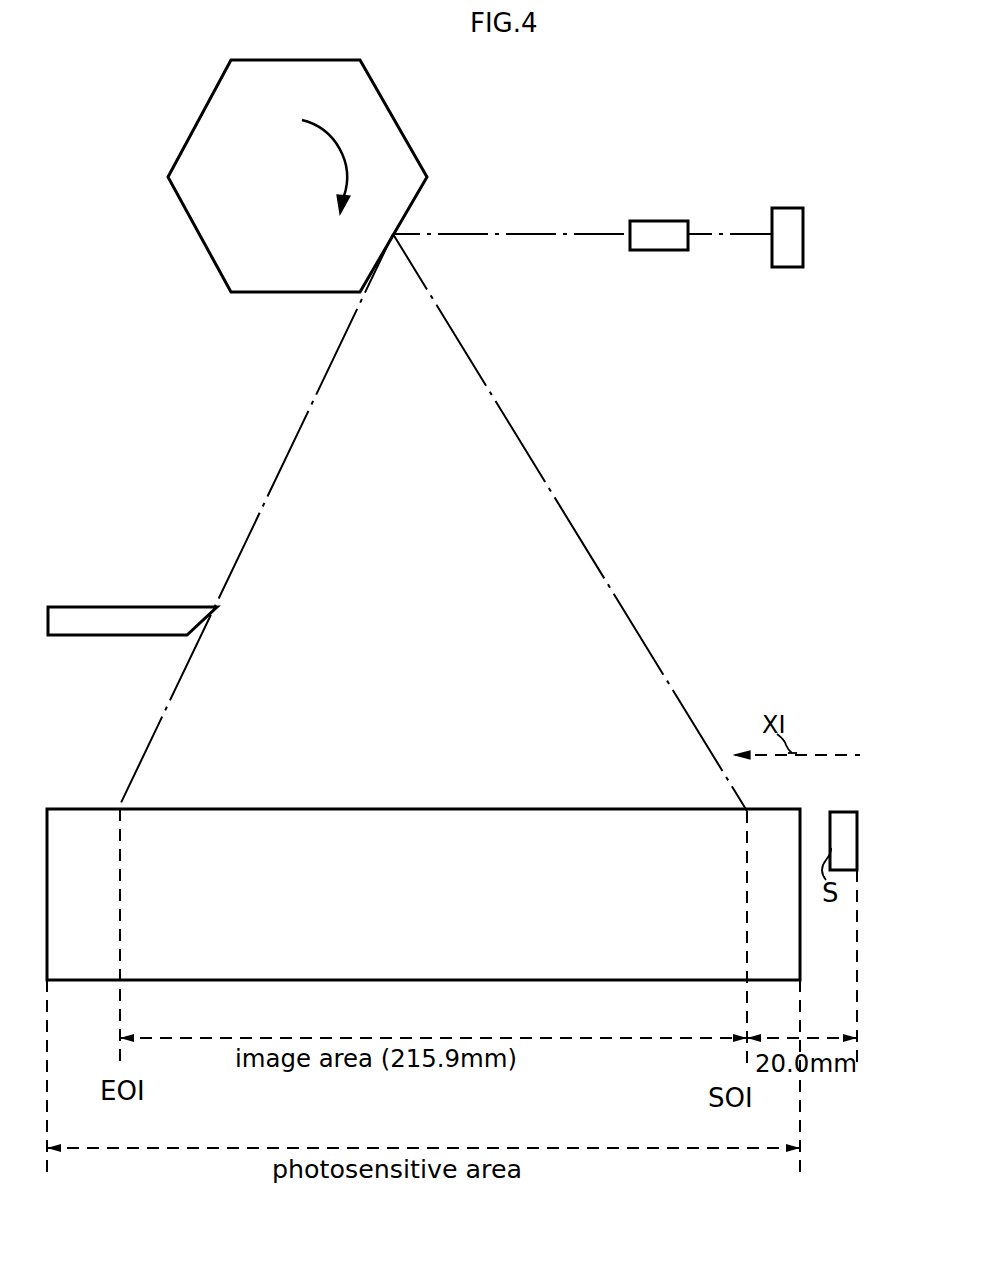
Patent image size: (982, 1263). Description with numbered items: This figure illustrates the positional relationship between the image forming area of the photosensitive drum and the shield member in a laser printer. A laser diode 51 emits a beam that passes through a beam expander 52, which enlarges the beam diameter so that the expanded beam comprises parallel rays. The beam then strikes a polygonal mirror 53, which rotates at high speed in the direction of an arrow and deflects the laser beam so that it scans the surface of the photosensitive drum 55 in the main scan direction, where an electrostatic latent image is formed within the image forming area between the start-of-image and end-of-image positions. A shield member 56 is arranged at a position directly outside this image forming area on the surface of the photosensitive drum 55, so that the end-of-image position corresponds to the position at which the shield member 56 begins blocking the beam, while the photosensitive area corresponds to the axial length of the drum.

The laser diode 51 is at (793, 208).
The beam expander 52 is at (657, 221).
The polygonal mirror 53 is at (238, 168).
The photosensitive drum 55 is at (98, 809).
The shield member 56 is at (125, 607).